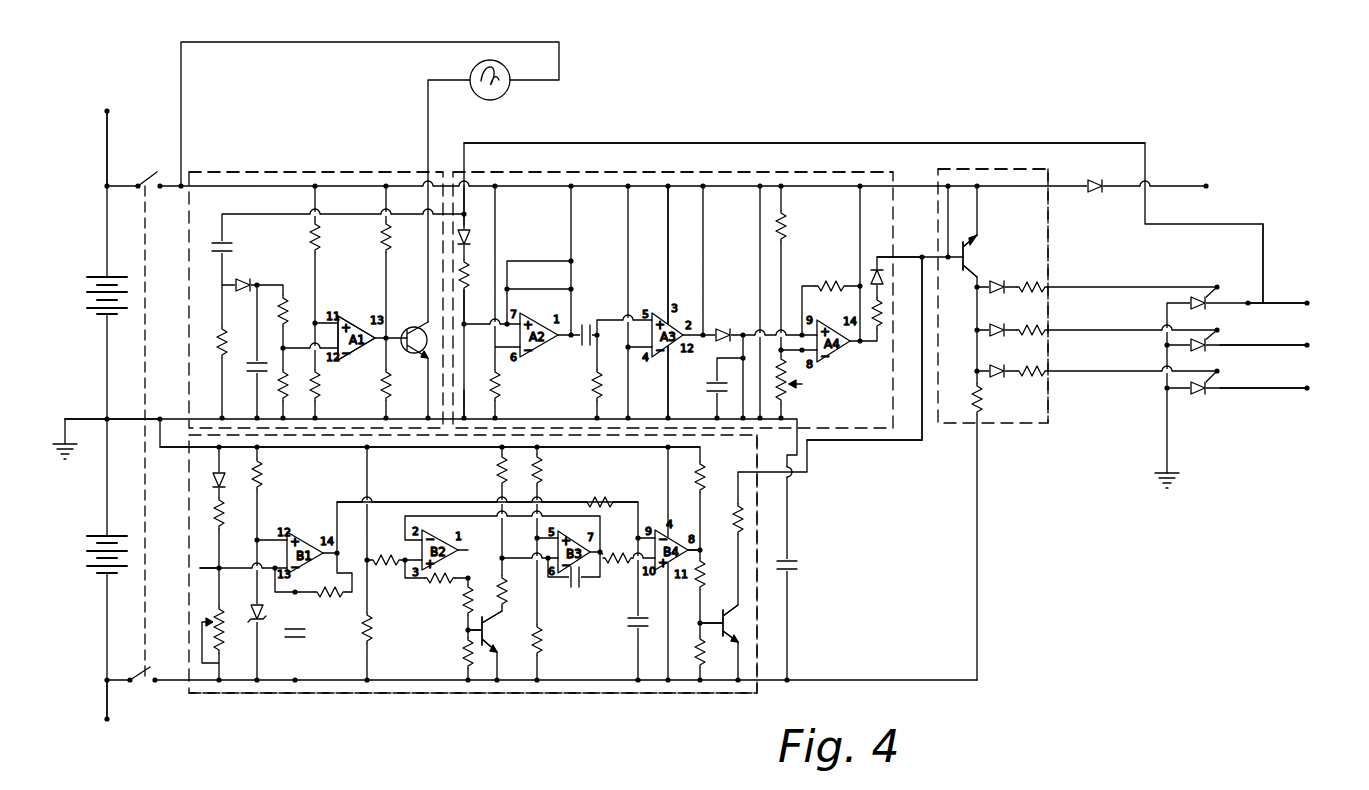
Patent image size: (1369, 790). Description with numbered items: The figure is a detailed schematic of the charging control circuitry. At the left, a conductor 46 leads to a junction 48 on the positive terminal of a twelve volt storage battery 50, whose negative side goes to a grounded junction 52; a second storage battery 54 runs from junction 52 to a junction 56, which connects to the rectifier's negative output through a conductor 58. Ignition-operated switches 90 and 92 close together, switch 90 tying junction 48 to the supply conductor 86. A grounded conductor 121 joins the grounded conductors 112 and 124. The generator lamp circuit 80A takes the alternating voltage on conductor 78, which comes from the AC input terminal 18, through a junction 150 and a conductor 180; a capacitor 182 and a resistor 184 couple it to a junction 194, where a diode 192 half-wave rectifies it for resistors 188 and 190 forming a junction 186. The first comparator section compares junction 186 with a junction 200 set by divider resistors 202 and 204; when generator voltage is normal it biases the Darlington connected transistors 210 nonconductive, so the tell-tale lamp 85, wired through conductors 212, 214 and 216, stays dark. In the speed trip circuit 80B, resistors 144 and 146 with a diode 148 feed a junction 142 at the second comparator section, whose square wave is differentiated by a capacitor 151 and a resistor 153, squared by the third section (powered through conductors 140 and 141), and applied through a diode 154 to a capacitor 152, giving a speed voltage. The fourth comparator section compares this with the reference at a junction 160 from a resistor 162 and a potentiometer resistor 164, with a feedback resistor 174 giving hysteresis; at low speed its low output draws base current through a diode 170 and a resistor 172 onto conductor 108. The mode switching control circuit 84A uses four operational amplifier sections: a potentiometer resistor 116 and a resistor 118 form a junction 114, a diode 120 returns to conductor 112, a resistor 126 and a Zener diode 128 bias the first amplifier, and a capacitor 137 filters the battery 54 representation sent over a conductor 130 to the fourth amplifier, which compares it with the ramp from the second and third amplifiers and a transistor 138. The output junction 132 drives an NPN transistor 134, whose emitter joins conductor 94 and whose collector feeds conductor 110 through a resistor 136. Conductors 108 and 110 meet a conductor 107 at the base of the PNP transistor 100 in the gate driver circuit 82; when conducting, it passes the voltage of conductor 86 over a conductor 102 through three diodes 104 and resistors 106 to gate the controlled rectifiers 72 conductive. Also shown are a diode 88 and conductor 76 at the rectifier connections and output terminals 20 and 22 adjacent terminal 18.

The conductor 46 is at (107, 138).
The junction 48 is at (107, 187).
The storage battery 50 is at (88, 295).
The junction 52 is at (107, 419).
The storage battery 54 is at (88, 560).
The junction 56 is at (107, 680).
The conductor 58 is at (107, 712).
The switch 90 is at (158, 174).
The switch 92 is at (153, 677).
The grounded conductor 121 is at (122, 419).
The conductor 216 is at (268, 42).
The generator tell-tale lamp 85 is at (497, 60).
The conductor 212 is at (428, 110).
The generator lamp circuit 80A is at (236, 172).
The speed trip circuit 80B is at (724, 172).
The conductor 86 is at (840, 186).
The conductor 78 is at (955, 143).
The capacitor 182 is at (230, 243).
The resistor 202 is at (318, 232).
The resistor 188 is at (284, 298).
The conductor 180 is at (383, 236).
The resistor 144 is at (460, 272).
The diode 192 is at (242, 283).
The junction 194 is at (222, 284).
The junction 200 is at (340, 345).
The Darlington connected NPN transistors 210 is at (411, 328).
The resistor 184 is at (222, 336).
The junction 186 is at (257, 358).
The conductor 214 is at (428, 405).
The resistor 190 is at (283, 385).
The resistor 204 is at (318, 390).
The junction 150 is at (466, 193).
The diode 148 is at (470, 235).
The junction 142 is at (468, 312).
The capacitor 151 is at (587, 328).
The resistor 153 is at (594, 390).
The conductor 124 is at (514, 418).
The conductor 140 is at (668, 240).
The conductor 141 is at (672, 358).
The capacitor 152 is at (710, 387).
The diode 154 is at (722, 328).
The resistor 162 is at (785, 228).
The feedback resistor 174 is at (832, 284).
The conductor 108 is at (882, 268).
The diode 170 is at (880, 272).
The resistor 172 is at (878, 330).
The junction 160 is at (802, 384).
The potentiometer resistor 164 is at (786, 396).
The diode 88 is at (1097, 195).
The controlled rectifier gate driver circuit 82 is at (1050, 225).
The PNP transistor 100 is at (967, 246).
The resistor 106 is at (1030, 287).
The conductor 107 is at (924, 262).
The conductor 102 is at (977, 300).
The diode 104 is at (990, 368).
The conductor 76 is at (1250, 301).
The AC input terminal 18 is at (1307, 303).
The output terminal 20 is at (1307, 345).
The output terminal 22 is at (1307, 388).
The controlled rectifier 72 is at (1207, 386).
The conductor 110 is at (878, 440).
The mode switching control circuit 84A is at (758, 502).
The resistor 136 is at (745, 522).
The NPN transistor 134 is at (745, 628).
The junction 132 is at (703, 545).
The grounded conductor 112 is at (582, 447).
The resistor 146 is at (483, 420).
The conductor 130 is at (397, 502).
The resistor 126 is at (264, 474).
The diode 120 is at (212, 480).
The resistor 118 is at (212, 513).
The junction 114 is at (200, 568).
The potentiometer resistor 116 is at (213, 631).
The capacitor 137 is at (300, 630).
The Zener diode 128 is at (264, 617).
The NPN transistor 138 is at (495, 628).
The conductor 94 is at (566, 693).